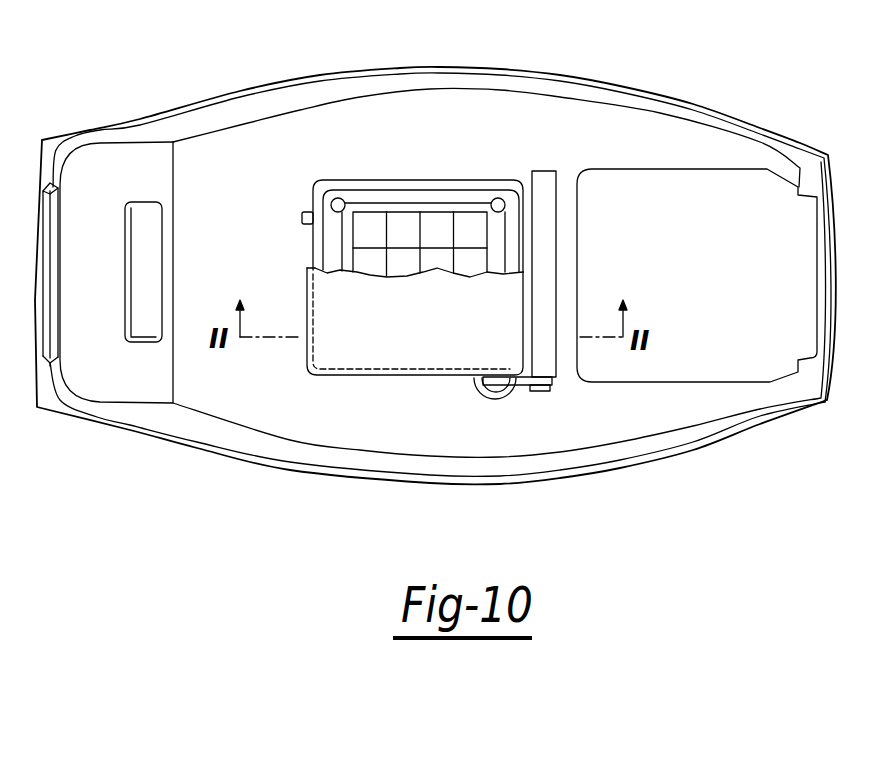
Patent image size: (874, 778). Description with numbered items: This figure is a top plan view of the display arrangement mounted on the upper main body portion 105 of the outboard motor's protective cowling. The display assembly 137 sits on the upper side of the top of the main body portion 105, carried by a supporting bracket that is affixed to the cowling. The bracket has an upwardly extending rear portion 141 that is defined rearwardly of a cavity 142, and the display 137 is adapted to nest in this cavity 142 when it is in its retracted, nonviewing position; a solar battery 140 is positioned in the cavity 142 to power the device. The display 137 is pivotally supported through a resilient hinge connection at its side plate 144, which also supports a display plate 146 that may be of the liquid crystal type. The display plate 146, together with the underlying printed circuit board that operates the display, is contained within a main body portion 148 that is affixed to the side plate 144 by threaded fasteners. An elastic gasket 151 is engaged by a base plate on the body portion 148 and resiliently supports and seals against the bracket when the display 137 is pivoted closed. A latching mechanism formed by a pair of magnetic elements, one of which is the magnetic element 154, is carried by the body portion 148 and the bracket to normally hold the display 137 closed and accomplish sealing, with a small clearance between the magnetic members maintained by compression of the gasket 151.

The upper main body portion 105 is at (657, 410).
The display assembly 137 is at (373, 342).
The solar battery 140 is at (485, 178).
The upwardly extending rear portion 141 is at (547, 254).
The cavity 142 is at (538, 392).
The side plate 144 is at (516, 385).
The display plate 146 is at (437, 228).
The main body portion 148 is at (443, 348).
The elastic gasket 151 is at (378, 198).
The magnetic element 154 is at (305, 216).